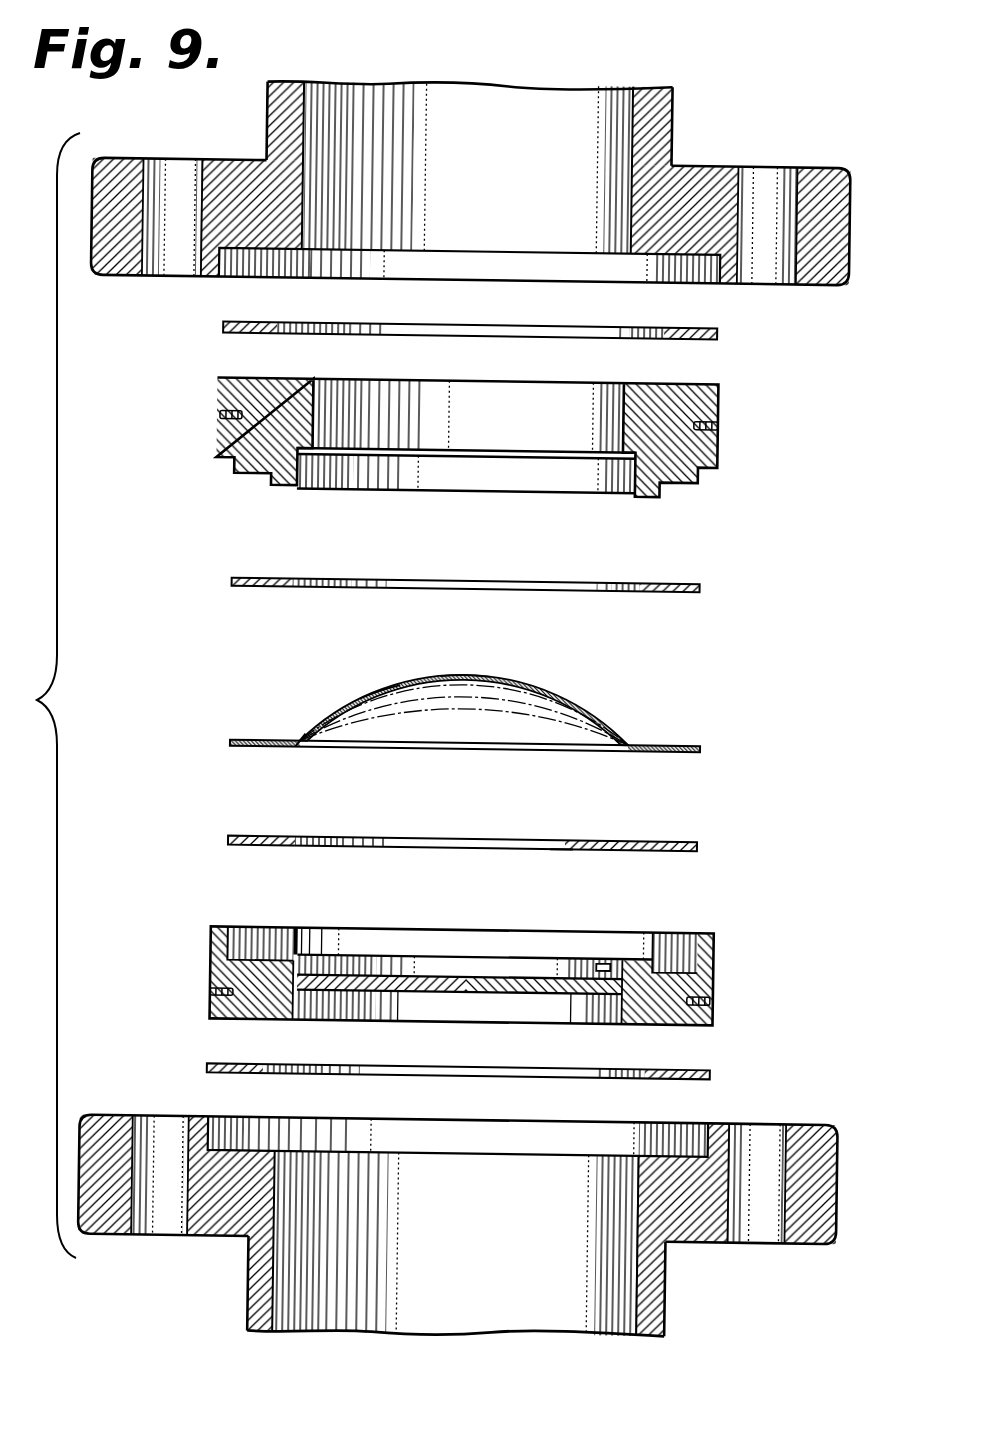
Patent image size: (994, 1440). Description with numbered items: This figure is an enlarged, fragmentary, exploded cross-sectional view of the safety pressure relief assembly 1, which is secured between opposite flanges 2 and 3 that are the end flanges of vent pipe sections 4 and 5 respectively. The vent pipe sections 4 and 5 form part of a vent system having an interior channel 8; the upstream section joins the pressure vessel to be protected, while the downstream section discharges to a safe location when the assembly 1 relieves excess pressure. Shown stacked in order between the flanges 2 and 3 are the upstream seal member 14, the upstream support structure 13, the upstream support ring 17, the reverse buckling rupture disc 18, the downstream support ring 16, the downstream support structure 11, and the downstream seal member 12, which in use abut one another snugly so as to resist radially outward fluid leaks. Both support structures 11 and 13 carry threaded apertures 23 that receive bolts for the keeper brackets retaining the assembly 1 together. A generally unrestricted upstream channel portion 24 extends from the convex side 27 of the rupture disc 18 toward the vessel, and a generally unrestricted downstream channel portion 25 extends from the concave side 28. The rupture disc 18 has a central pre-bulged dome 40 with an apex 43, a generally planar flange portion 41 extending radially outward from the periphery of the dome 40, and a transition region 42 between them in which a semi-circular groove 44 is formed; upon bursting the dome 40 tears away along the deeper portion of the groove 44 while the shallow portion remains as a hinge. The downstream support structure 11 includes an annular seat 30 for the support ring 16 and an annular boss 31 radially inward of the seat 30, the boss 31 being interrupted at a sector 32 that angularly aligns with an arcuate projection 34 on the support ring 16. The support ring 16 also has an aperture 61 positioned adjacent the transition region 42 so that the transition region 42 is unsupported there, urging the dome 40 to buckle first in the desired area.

The safety pressure relief assembly 1 is at (747, 598).
The flange 2 is at (477, 167).
The flange 3 is at (454, 1226).
The vent pipe section 4 is at (485, 152).
The vent pipe section 5 is at (474, 1262).
The interior channel 8 is at (552, 94).
The downstream support structure 11 is at (437, 961).
The downstream seal member 12 is at (717, 1070).
The upstream support structure 13 is at (212, 379).
The upstream seal member 14 is at (712, 330).
The downstream support ring 16 is at (438, 844).
The upstream support ring 17 is at (230, 580).
The reverse buckling rupture disc 18 is at (435, 710).
The threaded apertures 23 is at (213, 418).
The upstream channel portion 24 is at (464, 88).
The downstream channel portion 25 is at (441, 1336).
The convex side 27 is at (380, 691).
The concave side 28 is at (530, 694).
The annular seat 30 is at (252, 963).
The annular boss 31 is at (300, 937).
The sector 32 is at (622, 958).
The arcuate projection 34 is at (562, 847).
The dome 40 is at (465, 692).
The flange portion 41 is at (254, 738).
The transition region 42 is at (629, 750).
The apex 43 is at (470, 672).
The semi-circular groove 44 is at (300, 739).
The aperture 61 is at (622, 843).